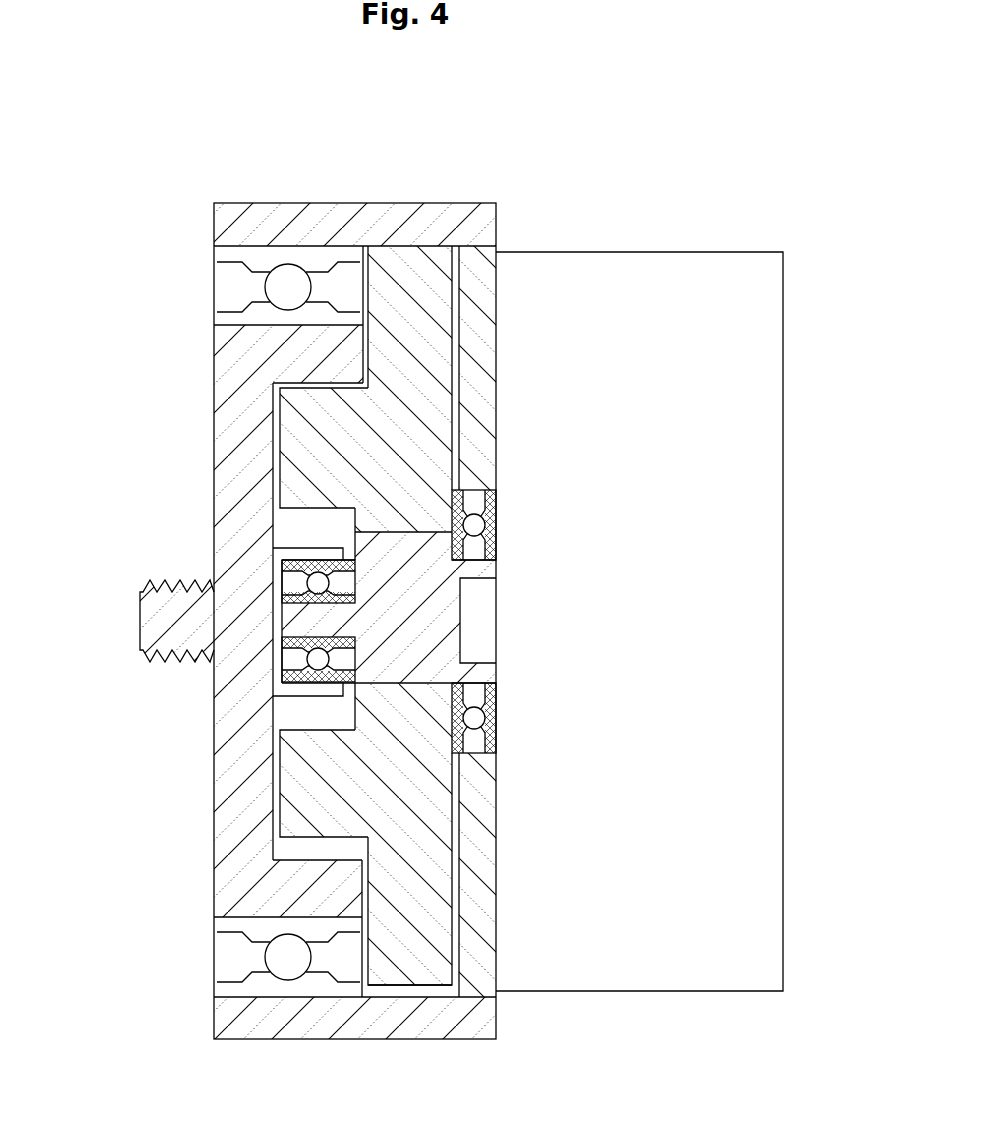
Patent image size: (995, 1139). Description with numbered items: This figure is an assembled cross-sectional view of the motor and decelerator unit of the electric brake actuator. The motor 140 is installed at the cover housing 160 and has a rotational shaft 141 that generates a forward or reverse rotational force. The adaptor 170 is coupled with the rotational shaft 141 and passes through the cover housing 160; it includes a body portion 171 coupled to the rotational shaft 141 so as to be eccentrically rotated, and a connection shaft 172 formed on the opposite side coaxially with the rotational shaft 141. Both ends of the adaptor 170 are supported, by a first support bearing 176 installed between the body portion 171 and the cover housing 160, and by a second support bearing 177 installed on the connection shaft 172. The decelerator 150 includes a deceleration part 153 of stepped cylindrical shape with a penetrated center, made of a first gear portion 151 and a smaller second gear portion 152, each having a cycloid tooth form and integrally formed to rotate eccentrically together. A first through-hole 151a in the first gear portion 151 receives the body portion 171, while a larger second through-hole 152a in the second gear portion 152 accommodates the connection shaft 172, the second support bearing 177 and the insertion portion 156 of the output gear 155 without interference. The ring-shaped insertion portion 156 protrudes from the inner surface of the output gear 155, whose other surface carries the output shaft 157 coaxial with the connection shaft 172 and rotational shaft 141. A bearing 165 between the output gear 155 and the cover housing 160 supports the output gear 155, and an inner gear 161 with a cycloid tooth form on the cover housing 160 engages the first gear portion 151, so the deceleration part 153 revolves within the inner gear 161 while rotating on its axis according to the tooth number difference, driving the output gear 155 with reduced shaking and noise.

The motor 140 is at (712, 265).
The rotational shaft 141 is at (494, 622).
The decelerator 150 is at (463, 247).
The first gear portion 151 is at (415, 272).
The first through-hole 151a is at (496, 560).
The second gear portion 152 is at (318, 412).
The second through-hole 152a is at (317, 522).
The deceleration part 153 is at (368, 527).
The output gear 155 is at (230, 692).
The insertion portion 156 is at (297, 548).
The output shaft 157 is at (145, 617).
The cover housing 160 is at (488, 945).
The inner gear 161 is at (405, 980).
The bearing 165 is at (262, 250).
The adaptor 170 is at (223, 701).
The body portion 171 is at (405, 667).
The connection shaft 172 is at (317, 630).
The first support bearing 176 is at (494, 521).
The second support bearing 177 is at (283, 583).